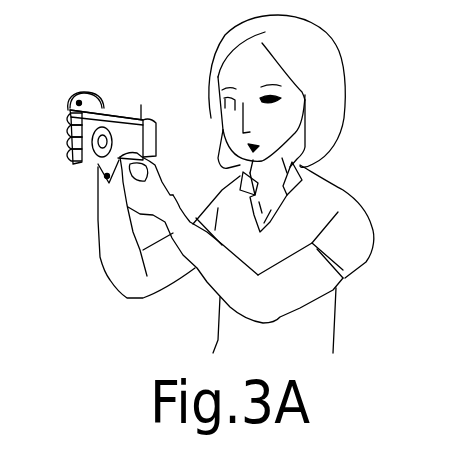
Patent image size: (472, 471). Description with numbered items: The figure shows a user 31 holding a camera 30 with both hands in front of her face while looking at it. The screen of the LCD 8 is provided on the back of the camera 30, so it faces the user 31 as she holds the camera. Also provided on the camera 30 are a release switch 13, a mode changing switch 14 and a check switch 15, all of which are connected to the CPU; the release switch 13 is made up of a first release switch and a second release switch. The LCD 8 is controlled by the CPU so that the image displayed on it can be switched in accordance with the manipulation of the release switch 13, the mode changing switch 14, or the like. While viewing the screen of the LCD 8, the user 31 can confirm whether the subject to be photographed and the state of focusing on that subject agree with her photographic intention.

The LCD 8 is at (156, 113).
The release switch (button) 13 is at (78, 98).
The mode changing switch (button) 14 is at (95, 184).
The check switch 15 is at (143, 104).
The camera 30 is at (121, 106).
The user 31 is at (235, 184).